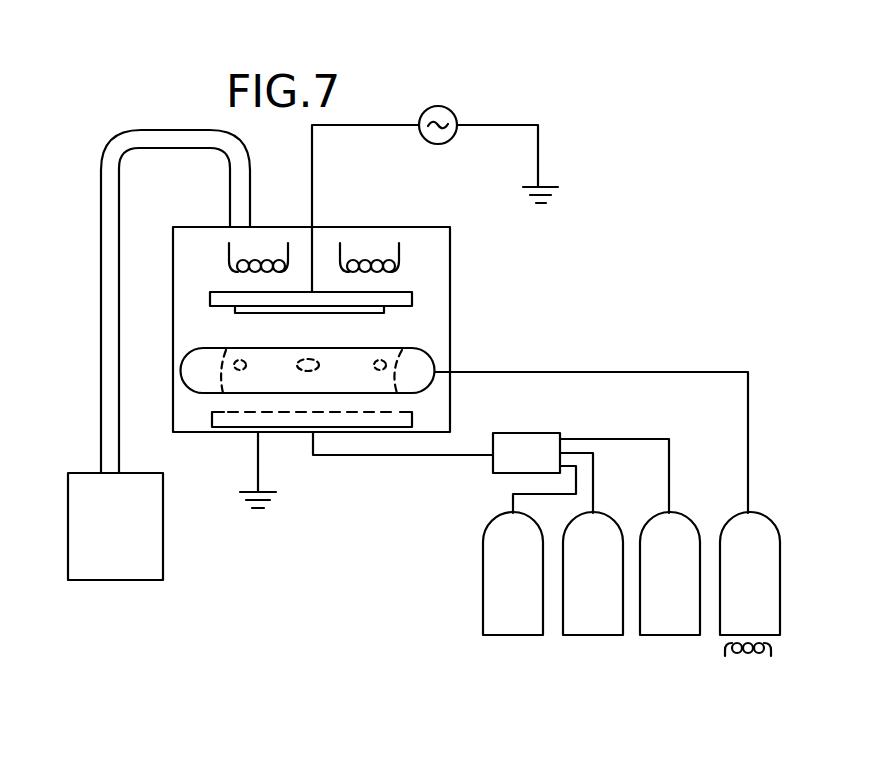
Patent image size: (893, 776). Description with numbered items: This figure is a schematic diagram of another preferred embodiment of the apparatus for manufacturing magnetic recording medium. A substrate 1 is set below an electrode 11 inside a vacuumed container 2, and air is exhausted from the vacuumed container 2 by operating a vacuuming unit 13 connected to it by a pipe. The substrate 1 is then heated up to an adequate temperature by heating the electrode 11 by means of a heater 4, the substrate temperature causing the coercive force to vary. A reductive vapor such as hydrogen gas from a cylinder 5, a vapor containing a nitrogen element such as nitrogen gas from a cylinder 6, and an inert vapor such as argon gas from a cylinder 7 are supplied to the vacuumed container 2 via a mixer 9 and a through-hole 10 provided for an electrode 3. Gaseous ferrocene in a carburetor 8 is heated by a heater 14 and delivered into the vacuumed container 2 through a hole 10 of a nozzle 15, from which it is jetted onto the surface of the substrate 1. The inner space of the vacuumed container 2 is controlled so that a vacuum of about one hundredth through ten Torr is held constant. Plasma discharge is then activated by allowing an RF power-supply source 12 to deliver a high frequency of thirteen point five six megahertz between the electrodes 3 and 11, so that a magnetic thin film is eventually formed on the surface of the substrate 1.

The substrate 1 is at (362, 313).
The vacuumed container 2 is at (450, 280).
The electrode 3 is at (412, 418).
The heater 4 is at (262, 268).
The cylinder 5 is at (512, 637).
The cylinder 6 is at (597, 637).
The cylinder 7 is at (672, 637).
The carburetor 8 is at (776, 584).
The mixer 9 is at (549, 433).
The through-hole 10 is at (243, 356).
The electrode 11 is at (412, 298).
The RF power-supply source 12 is at (453, 112).
The vacuuming unit 13 is at (137, 582).
The heater 14 is at (748, 654).
The nozzle 15 is at (437, 366).